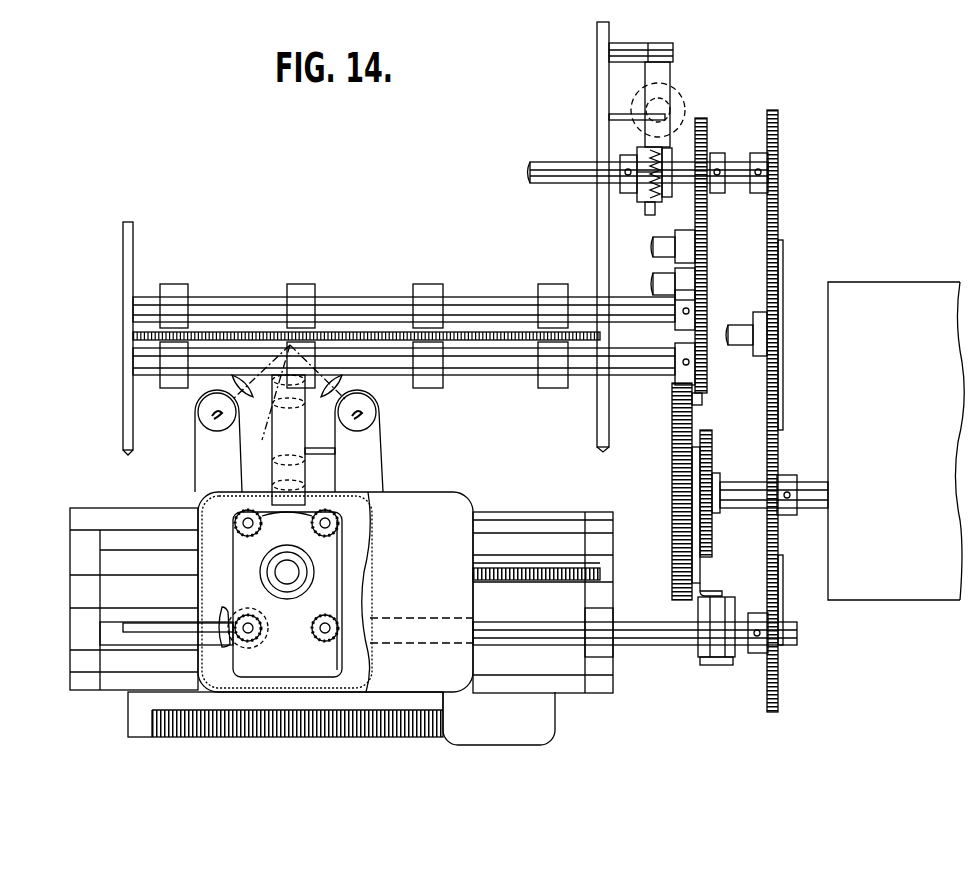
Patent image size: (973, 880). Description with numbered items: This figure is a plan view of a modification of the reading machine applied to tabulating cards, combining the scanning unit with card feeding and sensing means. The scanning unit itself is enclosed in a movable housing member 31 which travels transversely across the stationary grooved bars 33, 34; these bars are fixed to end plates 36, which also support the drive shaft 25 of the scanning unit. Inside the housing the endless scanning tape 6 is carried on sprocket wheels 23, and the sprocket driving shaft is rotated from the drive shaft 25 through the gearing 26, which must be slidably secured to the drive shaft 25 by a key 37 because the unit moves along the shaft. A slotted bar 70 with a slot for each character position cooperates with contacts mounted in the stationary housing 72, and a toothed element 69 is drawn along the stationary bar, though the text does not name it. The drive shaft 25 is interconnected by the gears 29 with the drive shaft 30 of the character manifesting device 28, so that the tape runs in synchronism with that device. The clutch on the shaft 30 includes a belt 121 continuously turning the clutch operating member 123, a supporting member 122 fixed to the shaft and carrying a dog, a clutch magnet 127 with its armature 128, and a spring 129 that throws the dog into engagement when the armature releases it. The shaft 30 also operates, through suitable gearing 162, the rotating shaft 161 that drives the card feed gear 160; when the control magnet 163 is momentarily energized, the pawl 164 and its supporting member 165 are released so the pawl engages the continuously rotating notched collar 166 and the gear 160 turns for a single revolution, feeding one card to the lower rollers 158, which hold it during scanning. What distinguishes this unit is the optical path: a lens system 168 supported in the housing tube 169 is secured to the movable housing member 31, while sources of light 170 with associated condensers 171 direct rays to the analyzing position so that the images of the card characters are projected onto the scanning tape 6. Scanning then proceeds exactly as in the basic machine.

The endless tape 6 is at (362, 595).
The sprocket wheels 23 is at (262, 528).
The drive shaft 25 is at (543, 626).
The gearing 26 is at (222, 648).
The character manifesting or indicating device 28 is at (870, 575).
The gears 29 is at (778, 538).
The drive shaft 30 is at (815, 486).
The housing member 31 is at (460, 518).
The stationary grooved bar 33 is at (512, 552).
The stationary grooved bar 34 is at (558, 520).
The end plates 36 is at (82, 662).
The key 37 is at (482, 630).
The rack 69 is at (562, 552).
The elongated slotted bar 70 is at (276, 722).
The stationary housing 72 is at (478, 727).
The belt 121 is at (678, 415).
The supporting member 122 is at (697, 408).
The clutch operating member 123 is at (697, 450).
The clutch magnet 127 is at (710, 612).
The armature 128 is at (718, 590).
The spring 129 is at (700, 482).
The lower rollers 158 is at (310, 360).
The gear 160 is at (700, 122).
The rotating shaft 161 is at (555, 166).
The gearing 162 is at (781, 205).
The control magnet 163 is at (684, 102).
The pawl 164 is at (646, 206).
The supporting member 165 is at (668, 172).
The notched collar 166 is at (643, 174).
The lens system 168 is at (283, 472).
The housing tube 169 is at (383, 455).
The sources of light 170 is at (207, 420).
The condensers 171 is at (235, 380).